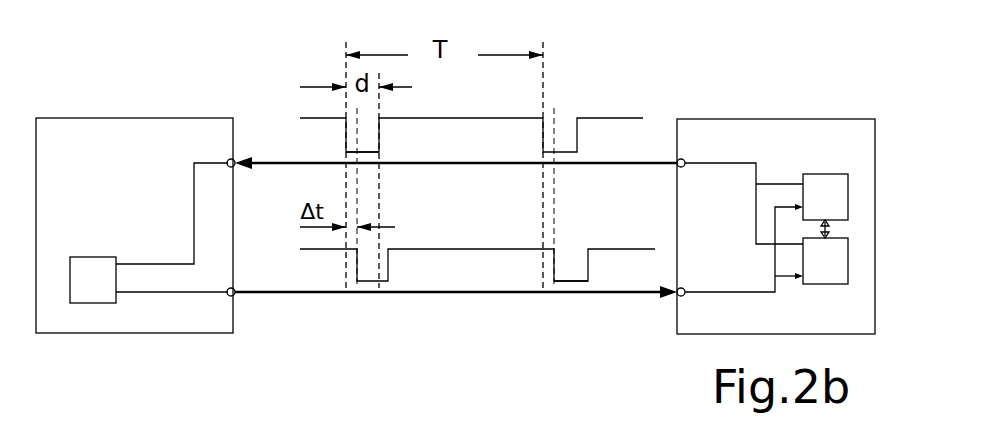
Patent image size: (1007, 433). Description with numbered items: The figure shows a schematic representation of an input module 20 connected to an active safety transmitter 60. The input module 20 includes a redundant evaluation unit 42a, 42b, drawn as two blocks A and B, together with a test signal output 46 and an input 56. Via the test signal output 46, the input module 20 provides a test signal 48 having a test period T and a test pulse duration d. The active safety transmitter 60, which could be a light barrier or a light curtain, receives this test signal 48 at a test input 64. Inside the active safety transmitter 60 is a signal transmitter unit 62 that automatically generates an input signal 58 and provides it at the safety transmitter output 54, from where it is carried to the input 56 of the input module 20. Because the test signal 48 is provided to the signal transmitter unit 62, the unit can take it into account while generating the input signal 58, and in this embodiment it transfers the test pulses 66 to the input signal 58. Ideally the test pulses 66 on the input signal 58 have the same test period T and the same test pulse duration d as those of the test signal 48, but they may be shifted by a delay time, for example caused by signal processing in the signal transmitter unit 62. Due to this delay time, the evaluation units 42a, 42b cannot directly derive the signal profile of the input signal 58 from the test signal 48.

The input module 20 is at (763, 133).
The evaluation unit 42a is at (838, 186).
The evaluation unit 42b is at (838, 272).
The test signal output 46 is at (684, 158).
The test signal 48 is at (598, 118).
The safety transmitter output 54 is at (234, 294).
The input 56 is at (677, 296).
The input signal 58 is at (447, 250).
The active safety transmitter 60 is at (100, 134).
The signal transmitter unit 62 is at (95, 283).
The test input 64 is at (233, 160).
The test pulses 66 is at (381, 143).